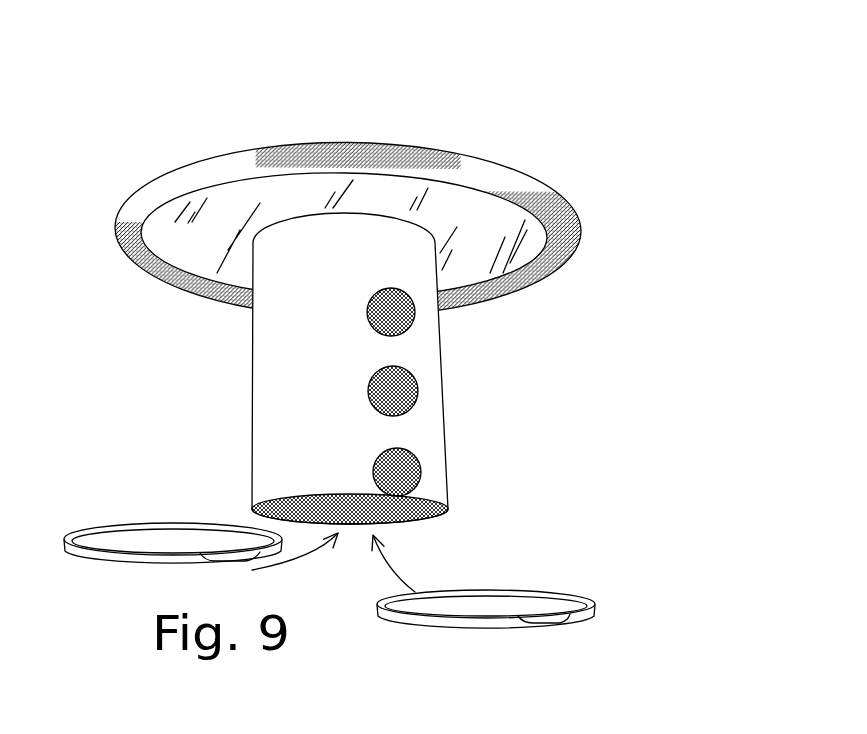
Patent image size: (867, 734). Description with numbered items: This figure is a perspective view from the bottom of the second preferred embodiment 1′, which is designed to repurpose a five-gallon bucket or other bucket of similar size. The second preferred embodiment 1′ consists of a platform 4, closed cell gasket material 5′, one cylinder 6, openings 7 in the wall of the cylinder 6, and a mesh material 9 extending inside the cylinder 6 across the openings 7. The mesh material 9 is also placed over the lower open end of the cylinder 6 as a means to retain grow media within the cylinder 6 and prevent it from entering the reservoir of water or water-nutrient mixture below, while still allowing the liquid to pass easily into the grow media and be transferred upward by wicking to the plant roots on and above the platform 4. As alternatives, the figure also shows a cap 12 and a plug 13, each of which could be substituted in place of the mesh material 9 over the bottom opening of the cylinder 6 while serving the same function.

The second preferred embodiment 1′ is at (228, 133).
The platform 4 is at (178, 240).
The closed cell gasket material 5′ is at (503, 187).
The cylinder 6 is at (278, 358).
The openings 7 is at (417, 328).
The mesh material 9 is at (420, 517).
The cap 12 is at (208, 533).
The plug 13 is at (525, 593).